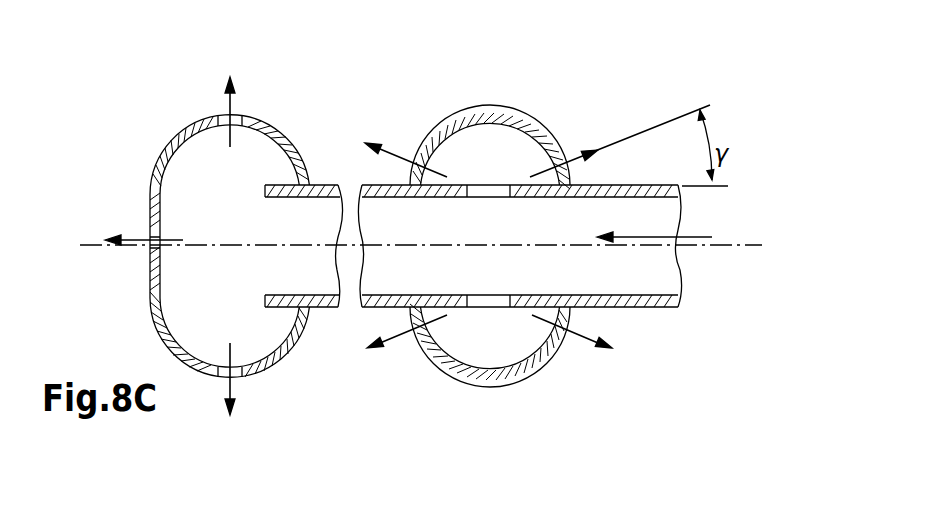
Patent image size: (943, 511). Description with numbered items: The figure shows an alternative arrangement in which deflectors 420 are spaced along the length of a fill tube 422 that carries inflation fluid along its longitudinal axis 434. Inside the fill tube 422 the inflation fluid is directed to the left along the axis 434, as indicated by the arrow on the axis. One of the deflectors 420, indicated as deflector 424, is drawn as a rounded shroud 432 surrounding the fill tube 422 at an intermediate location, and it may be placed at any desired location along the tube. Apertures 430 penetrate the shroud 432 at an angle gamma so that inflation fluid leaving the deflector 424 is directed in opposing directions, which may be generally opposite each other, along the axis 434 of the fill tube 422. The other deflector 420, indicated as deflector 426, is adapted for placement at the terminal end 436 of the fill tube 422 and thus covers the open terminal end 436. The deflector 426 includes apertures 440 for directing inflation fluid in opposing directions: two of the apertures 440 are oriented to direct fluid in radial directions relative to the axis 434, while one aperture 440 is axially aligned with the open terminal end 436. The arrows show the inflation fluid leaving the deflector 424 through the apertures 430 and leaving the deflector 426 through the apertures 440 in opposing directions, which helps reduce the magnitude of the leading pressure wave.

The deflectors 420 is at (395, 250).
The fill tube 422 is at (630, 308).
The deflector 424 is at (528, 405).
The deflector 426 is at (137, 165).
The apertures 430 is at (422, 160).
The shroud 432 is at (503, 120).
The longitudinal axis 434 is at (723, 247).
The terminal end 436 is at (267, 187).
The apertures 440 is at (237, 115).